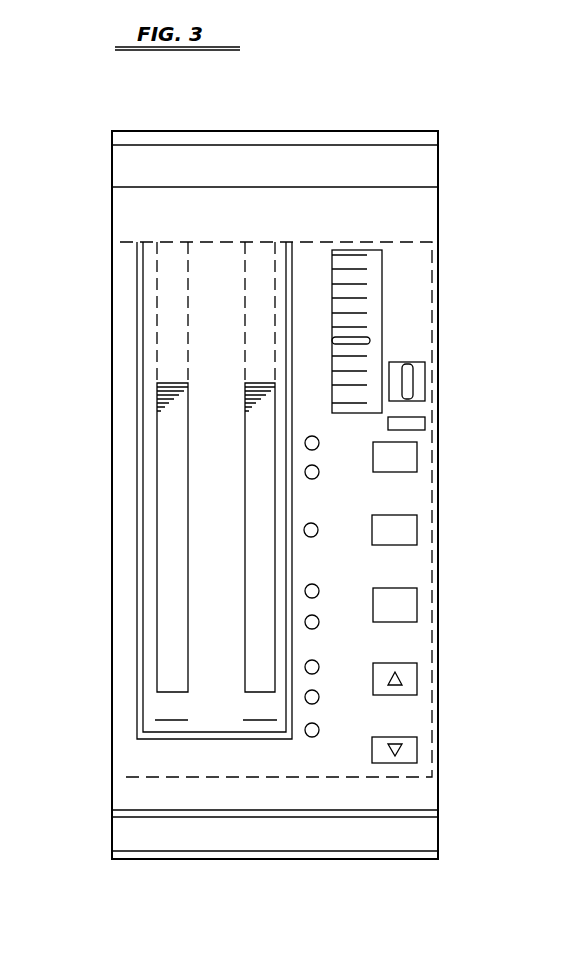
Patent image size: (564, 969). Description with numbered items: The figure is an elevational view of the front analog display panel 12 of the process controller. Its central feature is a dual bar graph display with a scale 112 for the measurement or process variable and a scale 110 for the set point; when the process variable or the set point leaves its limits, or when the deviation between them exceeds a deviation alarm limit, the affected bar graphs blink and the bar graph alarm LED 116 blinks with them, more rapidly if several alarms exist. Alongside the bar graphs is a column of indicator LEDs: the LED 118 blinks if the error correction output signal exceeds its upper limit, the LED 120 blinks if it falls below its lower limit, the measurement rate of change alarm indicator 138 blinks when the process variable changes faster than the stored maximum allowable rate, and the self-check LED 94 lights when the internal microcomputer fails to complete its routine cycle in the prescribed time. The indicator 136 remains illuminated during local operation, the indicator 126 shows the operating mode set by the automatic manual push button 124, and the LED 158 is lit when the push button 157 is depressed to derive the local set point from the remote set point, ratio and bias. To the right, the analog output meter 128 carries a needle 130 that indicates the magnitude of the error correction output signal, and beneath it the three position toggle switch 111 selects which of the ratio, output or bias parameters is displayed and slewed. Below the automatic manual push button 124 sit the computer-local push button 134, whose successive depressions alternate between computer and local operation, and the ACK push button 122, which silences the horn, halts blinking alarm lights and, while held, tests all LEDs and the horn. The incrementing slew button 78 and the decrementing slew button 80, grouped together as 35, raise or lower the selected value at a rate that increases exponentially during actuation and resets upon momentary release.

The analog display panel 12 is at (92, 394).
The scale for the set point 110 is at (171, 474).
The scale for the process variable 112 is at (167, 685).
The analog output meter 128 is at (396, 327).
The needle 130 is at (343, 340).
The three position toggle switch 111 is at (418, 372).
The push button 157 is at (417, 423).
The automatic manual push button 124 is at (413, 457).
The computer-local push button 134 is at (417, 523).
The ACK push button 122 is at (413, 593).
The incrementing slew button 78 is at (414, 651).
The decrementing slew button 80 is at (391, 763).
The up/down buttons 35 is at (420, 720).
The LED 158 is at (319, 447).
The indicator 126 is at (315, 479).
The indicator 136 is at (306, 535).
The LED 118 is at (319, 585).
The LED 120 is at (318, 627).
The measurement rate of change alarm indicator 138 is at (318, 661).
The bar graph alarm LED 116 is at (305, 698).
The self-check LED 94 is at (314, 737).